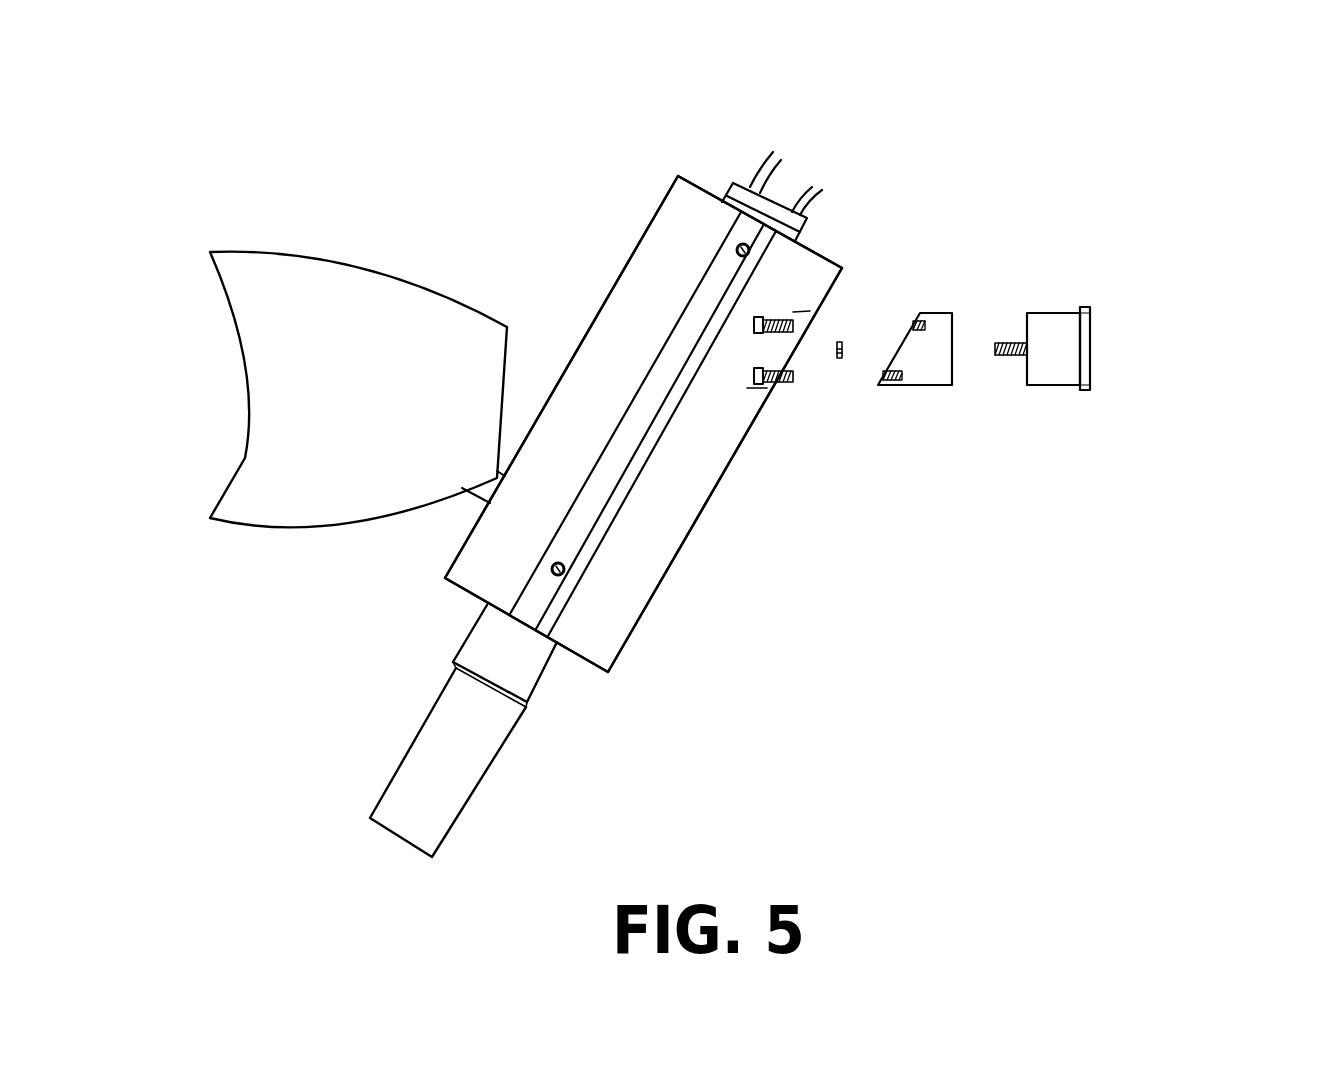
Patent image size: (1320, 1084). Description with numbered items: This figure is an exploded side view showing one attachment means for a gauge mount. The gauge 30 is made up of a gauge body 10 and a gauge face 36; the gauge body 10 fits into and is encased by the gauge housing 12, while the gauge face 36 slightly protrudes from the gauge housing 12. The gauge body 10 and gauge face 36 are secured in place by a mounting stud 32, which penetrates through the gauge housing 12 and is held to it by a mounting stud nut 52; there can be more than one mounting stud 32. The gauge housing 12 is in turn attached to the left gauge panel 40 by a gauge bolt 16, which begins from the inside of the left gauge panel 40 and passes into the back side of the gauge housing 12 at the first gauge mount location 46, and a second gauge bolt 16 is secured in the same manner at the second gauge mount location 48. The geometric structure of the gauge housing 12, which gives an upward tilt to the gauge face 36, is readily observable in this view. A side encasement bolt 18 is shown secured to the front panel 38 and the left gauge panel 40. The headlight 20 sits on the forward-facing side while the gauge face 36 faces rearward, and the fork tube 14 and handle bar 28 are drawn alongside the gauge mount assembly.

The gauge body 10 is at (1048, 358).
The gauge housing 12 is at (922, 367).
The fork tube 14 is at (470, 735).
The gauge bolt 16 is at (783, 375).
The side encasement bolt 18 is at (742, 244).
The headlight 20 is at (335, 305).
The handle bar 28 is at (787, 192).
The gauge 30 is at (1100, 343).
The mounting stud 32 is at (1007, 343).
The gauge face 36 is at (1092, 330).
The front panel 38 is at (512, 505).
The left gauge panel 40 is at (633, 600).
The first gauge mount location 46 is at (770, 388).
The second gauge mount location 48 is at (640, 580).
The mounting stud nut 52 is at (843, 342).